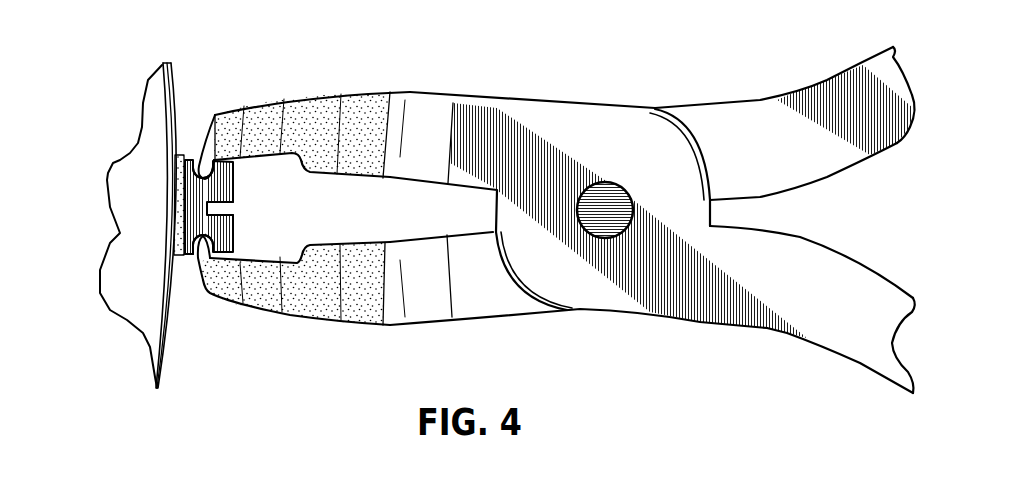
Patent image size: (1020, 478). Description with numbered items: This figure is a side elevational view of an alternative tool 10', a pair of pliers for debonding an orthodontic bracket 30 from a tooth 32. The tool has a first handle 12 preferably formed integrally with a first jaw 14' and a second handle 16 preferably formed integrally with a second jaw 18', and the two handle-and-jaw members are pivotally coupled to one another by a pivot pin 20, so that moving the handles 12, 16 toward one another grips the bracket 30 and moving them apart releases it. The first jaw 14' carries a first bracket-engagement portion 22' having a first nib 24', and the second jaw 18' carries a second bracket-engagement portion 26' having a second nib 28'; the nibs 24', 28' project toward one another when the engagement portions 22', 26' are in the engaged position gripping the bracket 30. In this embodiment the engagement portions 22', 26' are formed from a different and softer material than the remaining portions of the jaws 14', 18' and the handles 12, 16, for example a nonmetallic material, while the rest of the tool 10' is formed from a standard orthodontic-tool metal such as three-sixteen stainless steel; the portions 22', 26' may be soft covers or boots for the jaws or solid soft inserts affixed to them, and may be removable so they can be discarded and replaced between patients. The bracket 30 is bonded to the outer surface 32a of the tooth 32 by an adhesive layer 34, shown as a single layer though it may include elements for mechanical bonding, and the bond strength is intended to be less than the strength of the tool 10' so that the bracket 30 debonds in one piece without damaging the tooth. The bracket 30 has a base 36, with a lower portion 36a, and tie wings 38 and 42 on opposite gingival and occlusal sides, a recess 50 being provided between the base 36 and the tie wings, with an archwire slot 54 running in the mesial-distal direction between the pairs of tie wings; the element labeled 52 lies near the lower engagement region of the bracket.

The tool 10' is at (552, 207).
The first handle 12 is at (783, 100).
The first jaw 14' is at (578, 297).
The second handle 16 is at (837, 245).
The second jaw 18' is at (598, 203).
The pivot pin 20 is at (603, 211).
The first bracket-engagement portion 22' is at (295, 299).
The first nib 24' is at (205, 295).
The second bracket-engagement portion 26' is at (312, 122).
The second nib 28' is at (205, 137).
The orthodontic bracket 30 is at (228, 168).
The tooth 32 is at (168, 62).
The outer surface of tooth 32a is at (173, 92).
The adhesive layer 34 is at (178, 184).
The base 36 is at (197, 217).
The holder block lower portion 36a is at (178, 243).
The tie wing 38 is at (230, 162).
The tie wing 42 is at (227, 255).
The recess 50 is at (167, 162).
The lower bearing surface 52 is at (197, 252).
The archwire slot 54 is at (218, 209).